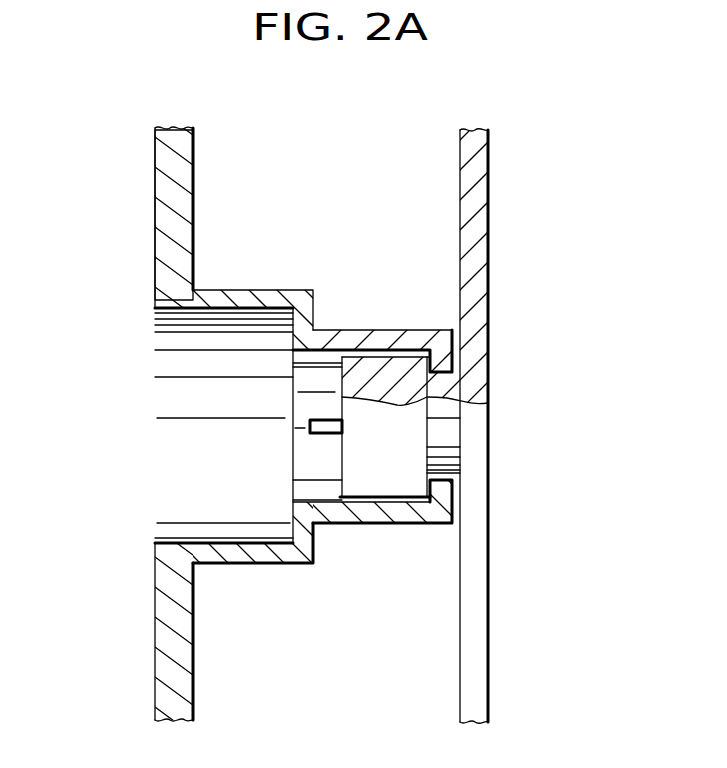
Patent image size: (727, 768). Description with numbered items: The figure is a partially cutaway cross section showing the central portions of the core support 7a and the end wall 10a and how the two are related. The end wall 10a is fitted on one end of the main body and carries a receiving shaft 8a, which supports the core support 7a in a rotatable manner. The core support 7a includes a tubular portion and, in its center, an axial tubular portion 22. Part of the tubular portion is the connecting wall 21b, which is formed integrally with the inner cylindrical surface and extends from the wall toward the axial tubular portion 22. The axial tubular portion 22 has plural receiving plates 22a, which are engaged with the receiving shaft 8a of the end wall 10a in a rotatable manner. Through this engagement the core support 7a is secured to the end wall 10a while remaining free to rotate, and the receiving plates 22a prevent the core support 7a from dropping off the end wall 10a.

The core support 7a is at (127, 172).
The end wall 10a is at (518, 172).
The connecting wall 21b is at (162, 240).
The axial tubular portion 22 is at (268, 565).
The receiving plates 22a is at (382, 338).
The receiving shaft 8a is at (413, 437).